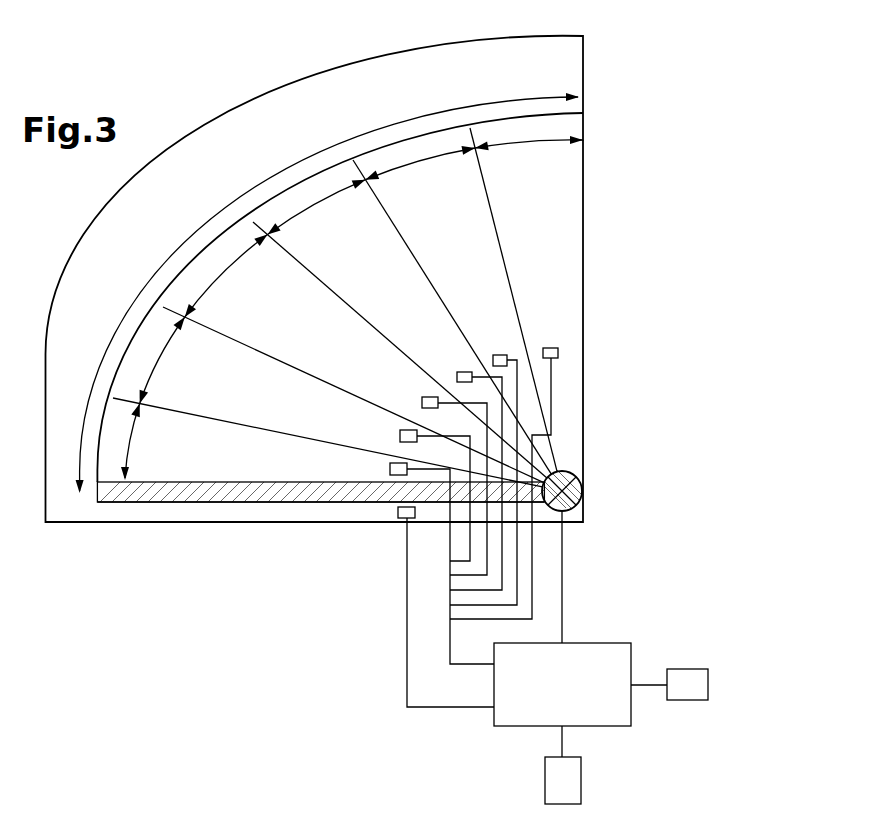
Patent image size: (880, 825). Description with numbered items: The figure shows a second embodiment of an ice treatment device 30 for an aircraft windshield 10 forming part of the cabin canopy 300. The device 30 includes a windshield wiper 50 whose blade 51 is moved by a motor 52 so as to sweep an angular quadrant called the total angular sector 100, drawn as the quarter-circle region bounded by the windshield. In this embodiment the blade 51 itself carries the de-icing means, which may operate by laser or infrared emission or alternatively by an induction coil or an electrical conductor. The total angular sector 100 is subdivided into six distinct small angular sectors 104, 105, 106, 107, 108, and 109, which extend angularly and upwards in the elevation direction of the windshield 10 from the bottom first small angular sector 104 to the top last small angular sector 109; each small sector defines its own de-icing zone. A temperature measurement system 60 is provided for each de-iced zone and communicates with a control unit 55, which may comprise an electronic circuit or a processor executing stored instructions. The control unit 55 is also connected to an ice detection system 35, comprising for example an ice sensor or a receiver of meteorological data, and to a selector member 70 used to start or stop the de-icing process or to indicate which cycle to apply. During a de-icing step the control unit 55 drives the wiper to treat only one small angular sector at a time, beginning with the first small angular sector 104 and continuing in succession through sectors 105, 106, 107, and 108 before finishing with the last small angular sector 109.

The canopy 300 is at (186, 110).
The windshield 10 is at (568, 63).
The total angular sector 100 is at (327, 293).
The bottom first small angular sector 104 is at (148, 442).
The second small angular sector 105 is at (175, 360).
The third small angular sector 106 is at (227, 276).
The fourth small angular sector 107 is at (317, 210).
The fifth small angular sector 108 is at (420, 173).
The top last small angular sector 109 is at (529, 161).
The windshield wiper 50 is at (267, 502).
The blade 51 is at (208, 502).
The motor 52 is at (583, 491).
The temperature measurement system 60 is at (550, 347).
The ice detection system 35 is at (398, 515).
The ice treatment device 30 is at (500, 798).
The control unit 55 is at (493, 717).
The selector member 70 is at (582, 785).